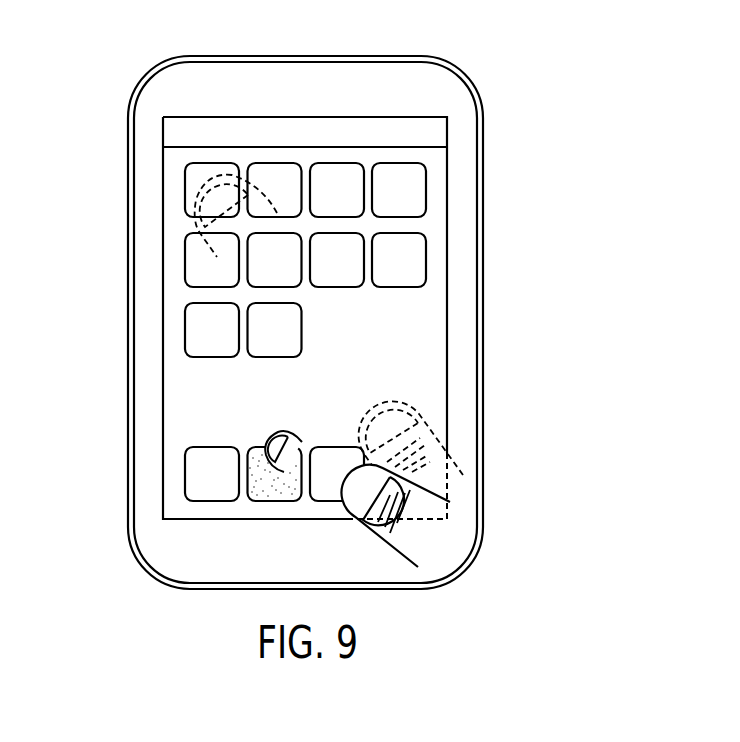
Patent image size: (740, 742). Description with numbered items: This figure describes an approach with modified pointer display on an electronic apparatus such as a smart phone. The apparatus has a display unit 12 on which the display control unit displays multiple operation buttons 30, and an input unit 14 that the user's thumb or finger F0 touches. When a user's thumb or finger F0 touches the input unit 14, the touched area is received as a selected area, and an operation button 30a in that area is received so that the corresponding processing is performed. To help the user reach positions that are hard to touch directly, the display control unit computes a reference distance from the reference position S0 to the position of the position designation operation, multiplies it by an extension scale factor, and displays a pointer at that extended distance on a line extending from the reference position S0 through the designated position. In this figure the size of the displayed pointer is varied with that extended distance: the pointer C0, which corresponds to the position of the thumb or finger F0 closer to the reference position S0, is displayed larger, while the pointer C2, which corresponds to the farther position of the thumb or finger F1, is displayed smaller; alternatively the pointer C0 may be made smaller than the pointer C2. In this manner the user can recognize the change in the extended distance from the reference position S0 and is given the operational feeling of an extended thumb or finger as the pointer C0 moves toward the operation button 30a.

The display unit 12 is at (358, 322).
The input unit 14 is at (447, 181).
The operation buttons 30 is at (185, 328).
The operation button 30a is at (185, 188).
The pointer C0 is at (197, 228).
The pointer C2 is at (265, 445).
The thumb or finger F0 is at (450, 460).
The thumb or finger F1 is at (418, 531).
The reference position S0 is at (450, 519).